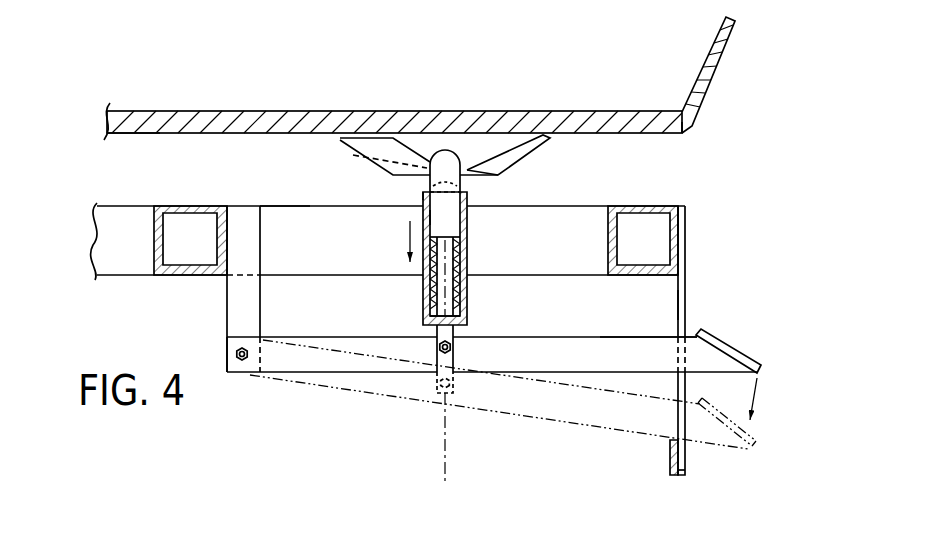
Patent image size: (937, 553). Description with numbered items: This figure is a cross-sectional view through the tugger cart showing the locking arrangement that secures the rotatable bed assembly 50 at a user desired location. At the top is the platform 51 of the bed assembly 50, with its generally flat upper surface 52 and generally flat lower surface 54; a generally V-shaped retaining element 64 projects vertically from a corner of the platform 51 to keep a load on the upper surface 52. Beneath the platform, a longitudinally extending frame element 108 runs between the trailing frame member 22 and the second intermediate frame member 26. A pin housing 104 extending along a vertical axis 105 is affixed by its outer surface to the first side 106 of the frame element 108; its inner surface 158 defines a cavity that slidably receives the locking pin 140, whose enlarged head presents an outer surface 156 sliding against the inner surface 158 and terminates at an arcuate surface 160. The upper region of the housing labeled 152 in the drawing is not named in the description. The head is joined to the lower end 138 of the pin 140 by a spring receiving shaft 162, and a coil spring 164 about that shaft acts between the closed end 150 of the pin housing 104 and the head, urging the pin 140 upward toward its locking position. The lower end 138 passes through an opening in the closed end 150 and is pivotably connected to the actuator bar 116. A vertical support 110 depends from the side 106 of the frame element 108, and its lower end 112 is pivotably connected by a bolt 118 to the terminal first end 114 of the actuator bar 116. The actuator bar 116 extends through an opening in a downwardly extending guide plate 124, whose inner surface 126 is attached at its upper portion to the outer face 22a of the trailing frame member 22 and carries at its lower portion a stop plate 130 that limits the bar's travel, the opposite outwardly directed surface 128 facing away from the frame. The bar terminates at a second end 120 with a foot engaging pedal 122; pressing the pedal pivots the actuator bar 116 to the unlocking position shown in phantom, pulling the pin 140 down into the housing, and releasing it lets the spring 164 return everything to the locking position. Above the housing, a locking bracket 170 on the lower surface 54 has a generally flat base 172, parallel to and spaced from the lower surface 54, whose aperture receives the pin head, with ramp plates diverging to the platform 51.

The trailing frame member 22 is at (641, 204).
The outer face 22a is at (684, 225).
The second intermediate frame member 26 is at (195, 202).
The bed assembly 50 is at (107, 118).
The platform 51 is at (686, 127).
The upper surface 52 is at (147, 111).
The lower surface 54 is at (125, 134).
The retaining element 64 is at (714, 78).
The pin housing 104 is at (470, 265).
The vertical axis 105 is at (445, 440).
The first side 106 is at (341, 259).
The frame element 108 is at (282, 203).
The vertical support 110 is at (228, 296).
The lower end 112 is at (229, 378).
The terminal first end 114 is at (249, 378).
The actuator bar 116 is at (425, 403).
The bolt 118 is at (235, 356).
The second end 120 is at (692, 330).
The foot engaging pedal 122 is at (734, 351).
The guide plate 124 is at (683, 482).
The inner surface 126 is at (678, 305).
The outwardly directed surface 128 is at (686, 240).
The stop plate 130 is at (667, 459).
The lower end 138 is at (458, 362).
The locking pin 140 is at (469, 200).
The closed end 150 is at (423, 327).
The housing wall 152 is at (421, 185).
The outer surface 156 is at (463, 222).
The inner surface 158 is at (437, 215).
The arcuate surface 160 is at (437, 153).
The spring receiving shaft 162 is at (434, 288).
The coil spring 164 is at (462, 306).
The locking bracket 170 is at (542, 159).
The base 172 is at (478, 167).